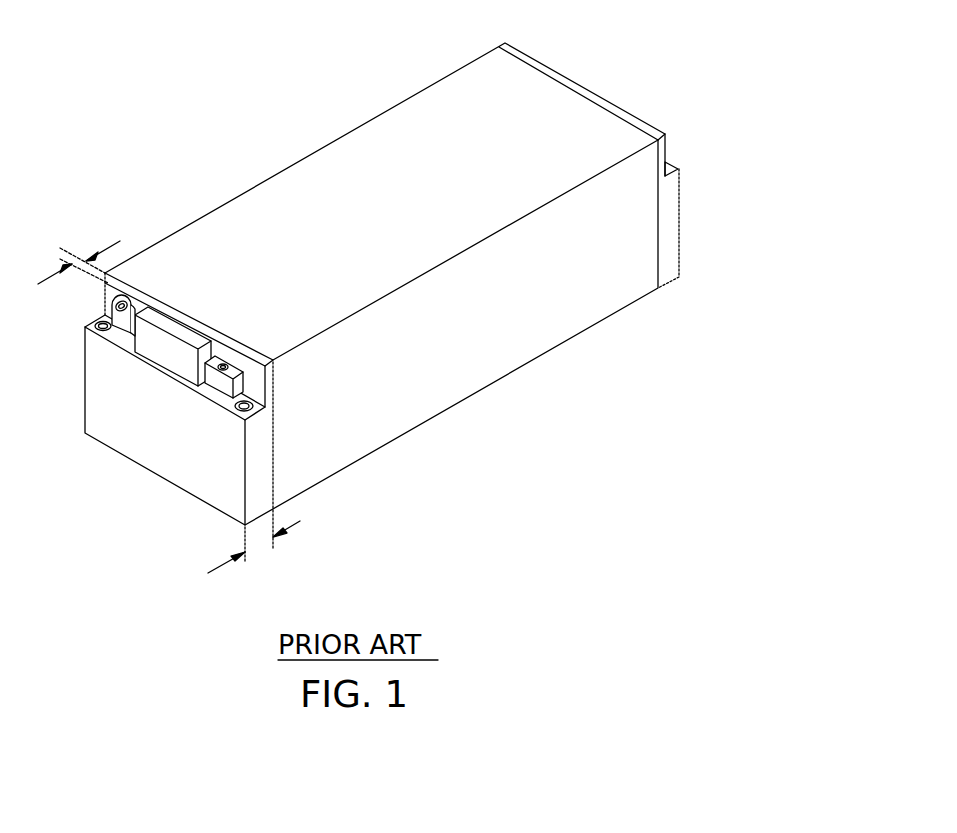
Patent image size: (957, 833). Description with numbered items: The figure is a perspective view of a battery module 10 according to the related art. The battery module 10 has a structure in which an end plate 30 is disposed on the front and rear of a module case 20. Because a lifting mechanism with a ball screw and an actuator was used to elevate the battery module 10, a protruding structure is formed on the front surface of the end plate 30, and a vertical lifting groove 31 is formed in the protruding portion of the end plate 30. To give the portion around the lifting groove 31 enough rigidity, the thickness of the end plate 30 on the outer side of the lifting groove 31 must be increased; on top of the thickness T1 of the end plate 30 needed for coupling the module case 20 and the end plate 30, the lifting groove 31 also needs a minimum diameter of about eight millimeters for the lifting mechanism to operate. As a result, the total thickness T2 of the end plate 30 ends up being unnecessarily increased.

The battery module 10 is at (98, 94).
The module case 20 is at (518, 356).
The end plate 30 is at (590, 89).
The lifting groove 31 is at (100, 321).
The thickness of the end plate T1 is at (79, 255).
The total thickness of the end plate T2 is at (254, 472).